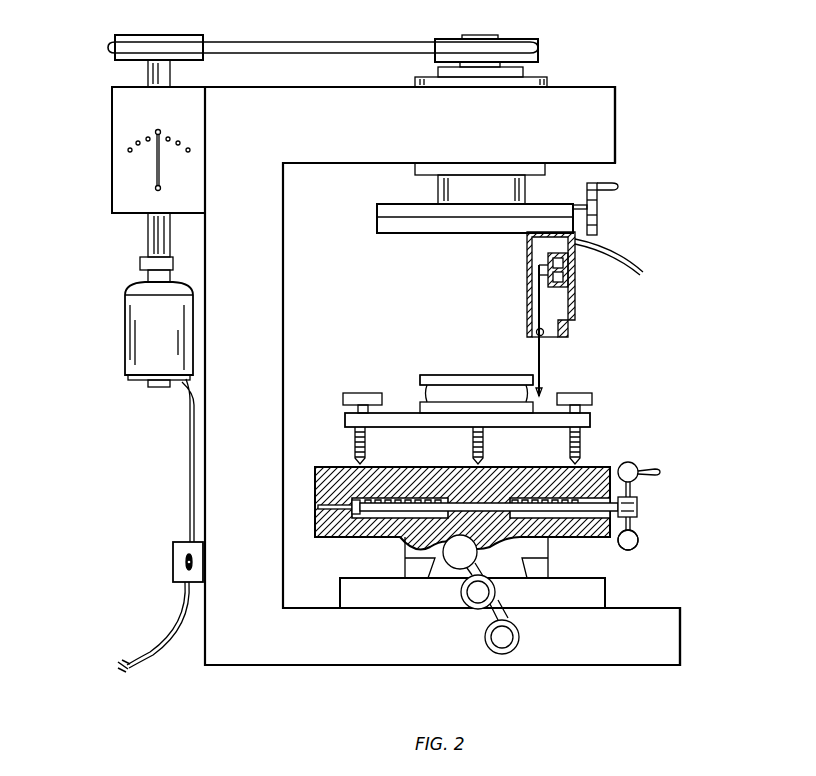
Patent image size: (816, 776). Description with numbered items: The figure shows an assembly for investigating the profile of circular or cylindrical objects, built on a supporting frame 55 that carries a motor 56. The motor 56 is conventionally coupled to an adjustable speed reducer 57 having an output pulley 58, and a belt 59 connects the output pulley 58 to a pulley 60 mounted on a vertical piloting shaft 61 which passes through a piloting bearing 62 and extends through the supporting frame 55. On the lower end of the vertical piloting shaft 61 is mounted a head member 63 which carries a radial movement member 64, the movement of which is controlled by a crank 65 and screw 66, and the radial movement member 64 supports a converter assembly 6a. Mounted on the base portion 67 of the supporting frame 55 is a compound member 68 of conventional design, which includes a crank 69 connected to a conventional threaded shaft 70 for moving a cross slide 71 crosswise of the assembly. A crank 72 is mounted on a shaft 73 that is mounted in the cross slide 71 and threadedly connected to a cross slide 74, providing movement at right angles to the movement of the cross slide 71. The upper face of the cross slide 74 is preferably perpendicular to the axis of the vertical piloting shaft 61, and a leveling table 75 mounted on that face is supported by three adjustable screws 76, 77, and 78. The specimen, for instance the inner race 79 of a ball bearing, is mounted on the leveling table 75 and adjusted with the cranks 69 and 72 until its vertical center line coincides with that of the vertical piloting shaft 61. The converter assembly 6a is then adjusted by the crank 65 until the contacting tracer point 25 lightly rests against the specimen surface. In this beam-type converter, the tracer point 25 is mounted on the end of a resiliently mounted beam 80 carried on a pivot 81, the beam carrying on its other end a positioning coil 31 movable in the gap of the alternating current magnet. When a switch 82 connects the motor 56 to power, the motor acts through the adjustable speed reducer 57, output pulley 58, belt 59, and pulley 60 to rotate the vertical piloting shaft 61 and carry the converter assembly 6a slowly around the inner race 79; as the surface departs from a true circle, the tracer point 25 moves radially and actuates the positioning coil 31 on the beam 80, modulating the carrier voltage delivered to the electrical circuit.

The converter assembly 6a is at (575, 295).
The contacting tracer point 25 is at (545, 390).
The positioning coil 31 is at (548, 280).
The supporting frame 55 is at (615, 103).
The motor 56 is at (145, 352).
The adjustable speed reducer 57 is at (125, 135).
The output pulley 58 is at (128, 62).
The belt 59 is at (283, 48).
The pulley 60 is at (515, 43).
The vertical piloting shaft 61 is at (500, 68).
The piloting bearing 62 is at (550, 81).
The head member 63 is at (558, 204).
The radial movement member 64 is at (598, 236).
The crank 65 is at (618, 187).
The screw 66 is at (598, 208).
The base portion 67 is at (680, 608).
The compound member 68 is at (605, 600).
The crank 69 is at (500, 654).
The threaded shaft 70 is at (470, 609).
The cross slide 71 is at (575, 540).
The crank 72 is at (637, 506).
The shaft 73 is at (615, 520).
The cross slide 74 is at (596, 466).
The leveling table 75 is at (612, 412).
The adjustable screw 76 is at (355, 447).
The adjustable screw 77 is at (473, 446).
The adjustable screw 78 is at (570, 446).
The inner race 79 is at (450, 375).
The resiliently mounted beam 80 is at (543, 357).
The pivot 81 is at (537, 334).
The switch 82 is at (173, 563).